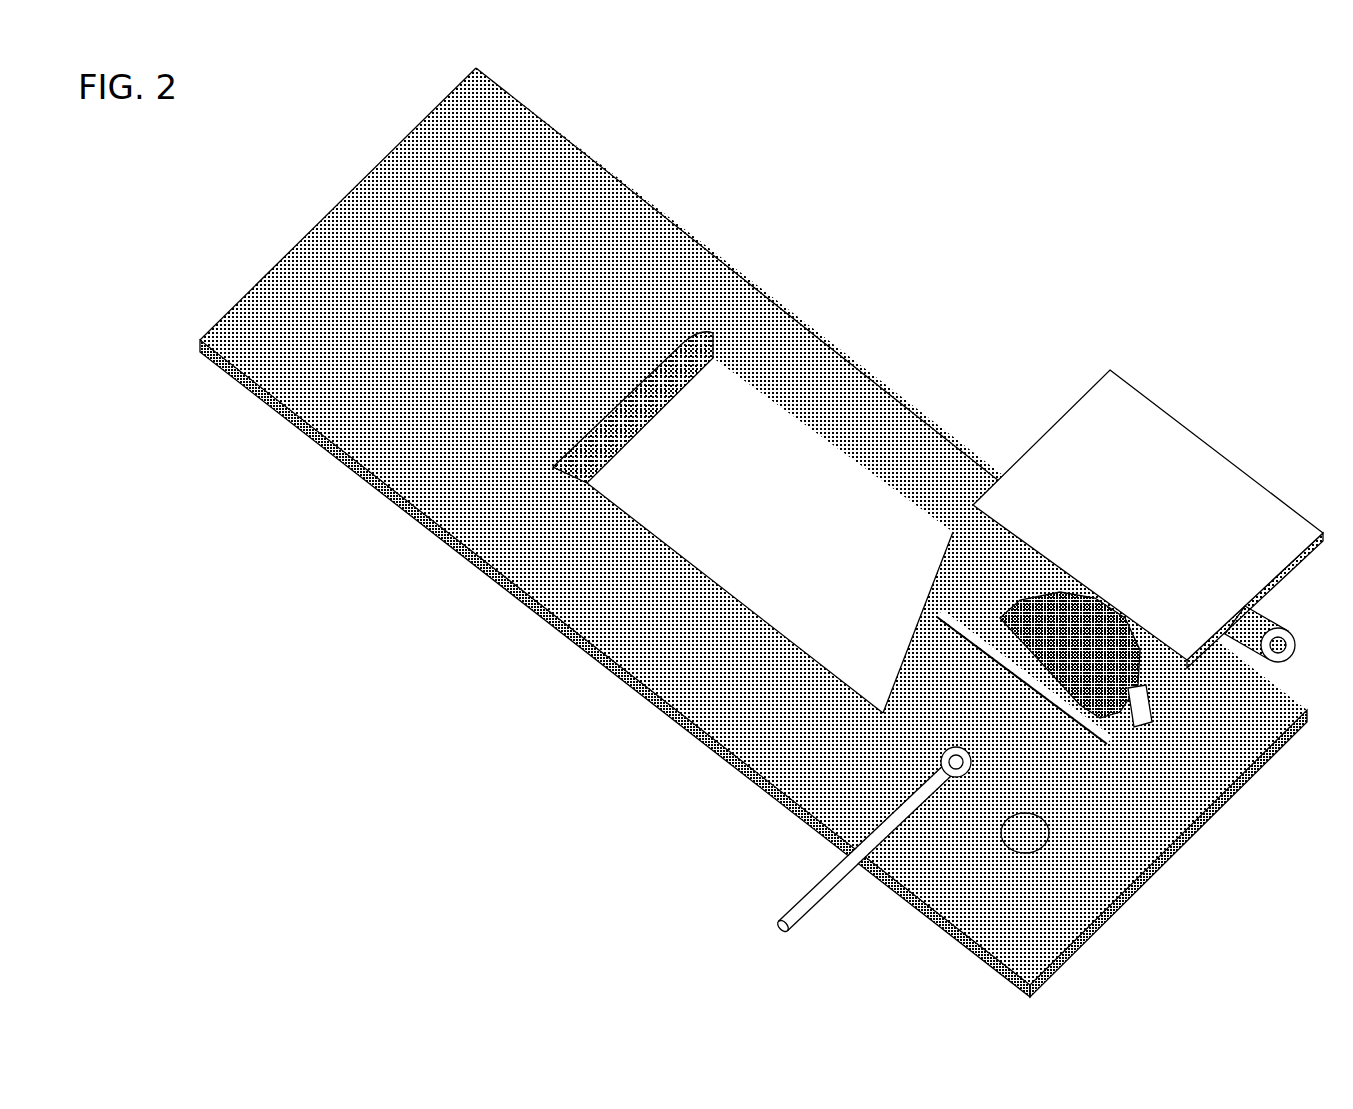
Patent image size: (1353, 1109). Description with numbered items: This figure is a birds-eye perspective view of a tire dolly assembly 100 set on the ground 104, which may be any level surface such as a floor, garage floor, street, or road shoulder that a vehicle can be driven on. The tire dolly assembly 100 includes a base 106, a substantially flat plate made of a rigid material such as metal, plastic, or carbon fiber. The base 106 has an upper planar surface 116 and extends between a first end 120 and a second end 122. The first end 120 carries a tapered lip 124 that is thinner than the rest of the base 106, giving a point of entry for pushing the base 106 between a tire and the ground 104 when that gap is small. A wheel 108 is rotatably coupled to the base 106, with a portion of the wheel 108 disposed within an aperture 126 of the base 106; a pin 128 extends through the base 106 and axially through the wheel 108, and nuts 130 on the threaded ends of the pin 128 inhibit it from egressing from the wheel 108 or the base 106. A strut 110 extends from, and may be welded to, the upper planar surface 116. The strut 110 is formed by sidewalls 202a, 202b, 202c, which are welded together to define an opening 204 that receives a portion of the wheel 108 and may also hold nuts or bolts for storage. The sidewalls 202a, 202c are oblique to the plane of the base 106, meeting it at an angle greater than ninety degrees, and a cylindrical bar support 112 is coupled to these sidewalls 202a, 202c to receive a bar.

The tire dolly assembly 100 is at (883, 285).
The ground 104 is at (362, 304).
The base 106 is at (718, 527).
The wheel 108 is at (1050, 669).
The strut 110 is at (1109, 522).
The bar support 112 is at (1243, 638).
The upper planar surface 116 is at (750, 433).
The first end 120 is at (597, 493).
The second end 122 is at (1010, 820).
The tapered lip 124 is at (608, 430).
The aperture 126 is at (1135, 723).
The pin 128 is at (843, 871).
The nuts 130 is at (972, 777).
The sidewall 202a is at (1020, 576).
The sidewall 202b is at (975, 694).
The sidewall 202c is at (1177, 713).
The opening 204 is at (975, 622).